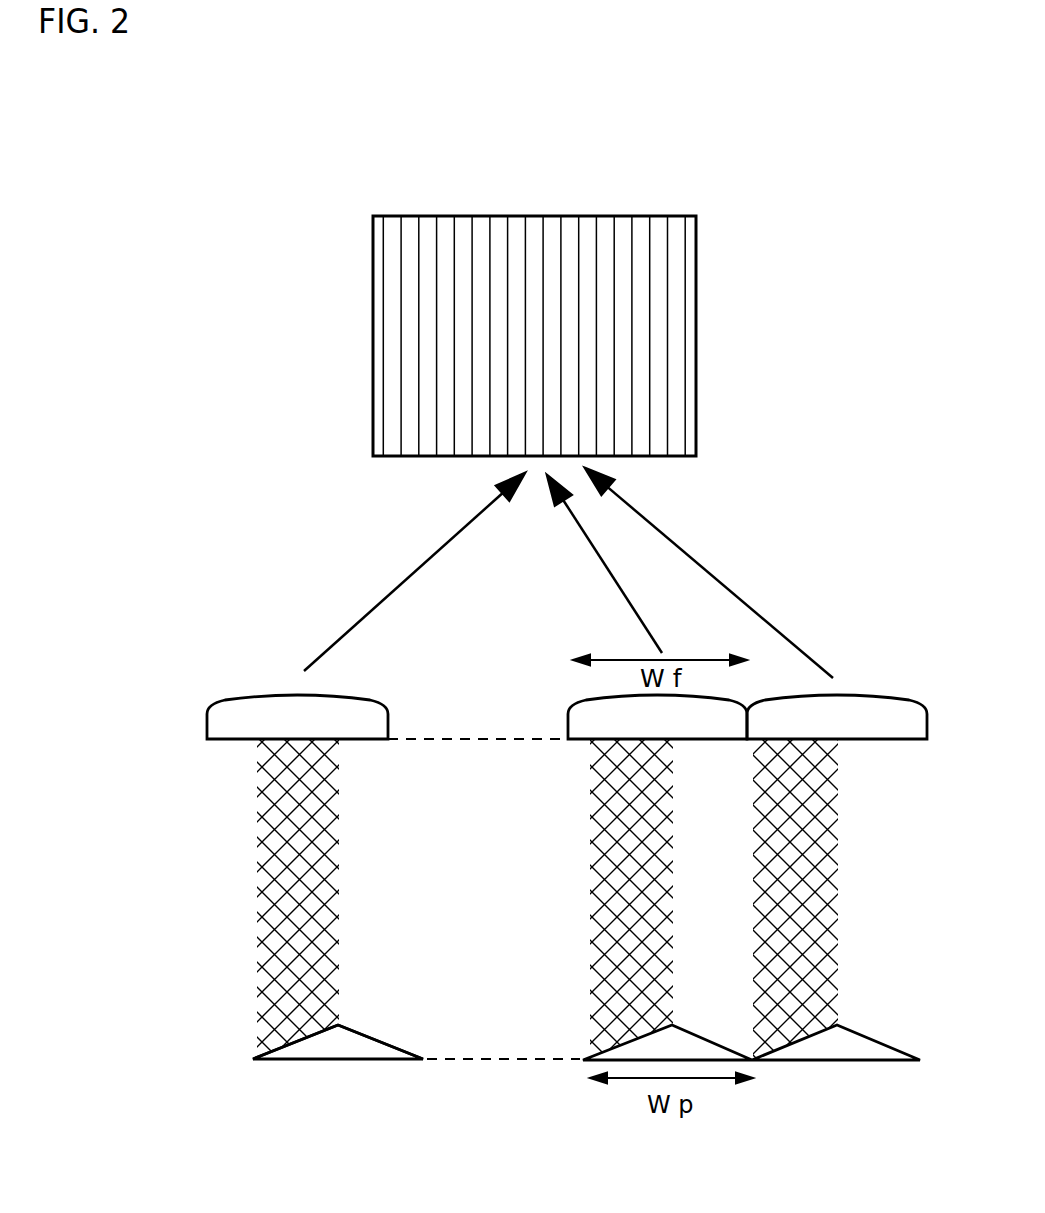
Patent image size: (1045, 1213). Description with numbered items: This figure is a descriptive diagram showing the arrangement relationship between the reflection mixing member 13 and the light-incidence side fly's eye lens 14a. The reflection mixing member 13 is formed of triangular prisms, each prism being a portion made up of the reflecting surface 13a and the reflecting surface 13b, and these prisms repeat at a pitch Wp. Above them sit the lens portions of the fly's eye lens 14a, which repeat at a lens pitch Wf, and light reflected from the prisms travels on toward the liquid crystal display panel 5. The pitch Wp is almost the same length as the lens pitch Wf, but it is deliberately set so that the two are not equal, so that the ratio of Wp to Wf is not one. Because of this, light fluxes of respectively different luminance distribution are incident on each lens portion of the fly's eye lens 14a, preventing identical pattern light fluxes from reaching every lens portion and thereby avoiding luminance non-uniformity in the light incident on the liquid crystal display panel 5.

The liquid crystal display panel 5 is at (380, 362).
The light-incidence side fly's eye lens 14a is at (197, 722).
The reflection mixing member 13 is at (325, 1062).
The reflecting surface 13a is at (288, 1043).
The reflecting surface 13b is at (360, 1031).